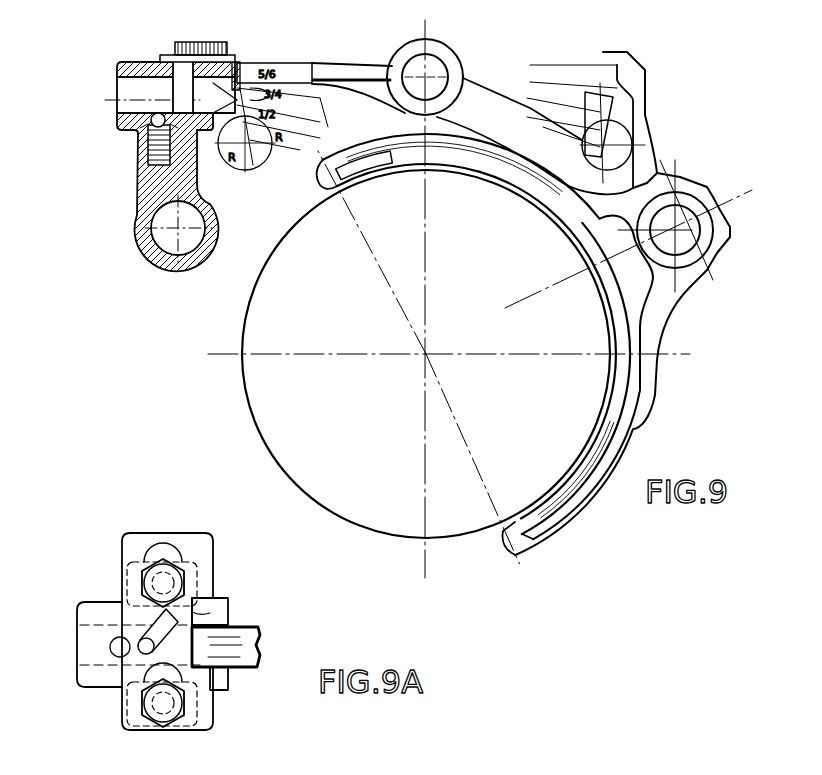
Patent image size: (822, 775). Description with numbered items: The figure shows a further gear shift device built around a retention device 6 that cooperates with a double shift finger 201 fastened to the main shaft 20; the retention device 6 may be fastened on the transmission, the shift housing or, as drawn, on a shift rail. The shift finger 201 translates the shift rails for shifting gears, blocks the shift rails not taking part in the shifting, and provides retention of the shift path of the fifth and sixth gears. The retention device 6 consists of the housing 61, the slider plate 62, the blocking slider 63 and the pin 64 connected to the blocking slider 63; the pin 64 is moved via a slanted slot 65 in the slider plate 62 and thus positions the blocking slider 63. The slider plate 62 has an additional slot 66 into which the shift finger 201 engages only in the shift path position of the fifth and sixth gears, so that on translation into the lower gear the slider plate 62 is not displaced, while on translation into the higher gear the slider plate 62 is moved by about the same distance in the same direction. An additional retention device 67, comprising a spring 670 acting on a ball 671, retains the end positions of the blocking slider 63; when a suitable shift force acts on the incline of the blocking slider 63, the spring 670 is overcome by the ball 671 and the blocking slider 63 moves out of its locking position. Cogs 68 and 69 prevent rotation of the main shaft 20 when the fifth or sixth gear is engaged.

In FIG. 9, the retention device 6 is at (108, 48).
In FIG. 9, the main shaft 20 is at (446, 57).
In FIG. 9, the housing 61 is at (138, 212).
In FIG. 9, the slider plate 62 is at (233, 58).
In FIG. 9A, the slider plate 62 is at (138, 545).
In FIG. 9, the blocking slider 63 is at (118, 103).
In FIG. 9, the pin 64 is at (172, 90).
In FIG. 9A, the pin 64 is at (145, 657).
In FIG. 9A, the slanted slot 65 is at (152, 613).
In FIG. 9A, the slot 66 is at (210, 613).
In FIG. 9, the additional retention device 67 is at (124, 160).
In FIG. 9A, the cog 68 is at (217, 610).
In FIG. 9A, the cog 69 is at (220, 680).
In FIG. 9, the shift finger 201 is at (298, 70).
In FIG. 9A, the shift finger 201 is at (240, 653).
In FIG. 9, the spring 670 is at (137, 182).
In FIG. 9, the ball 671 is at (122, 140).